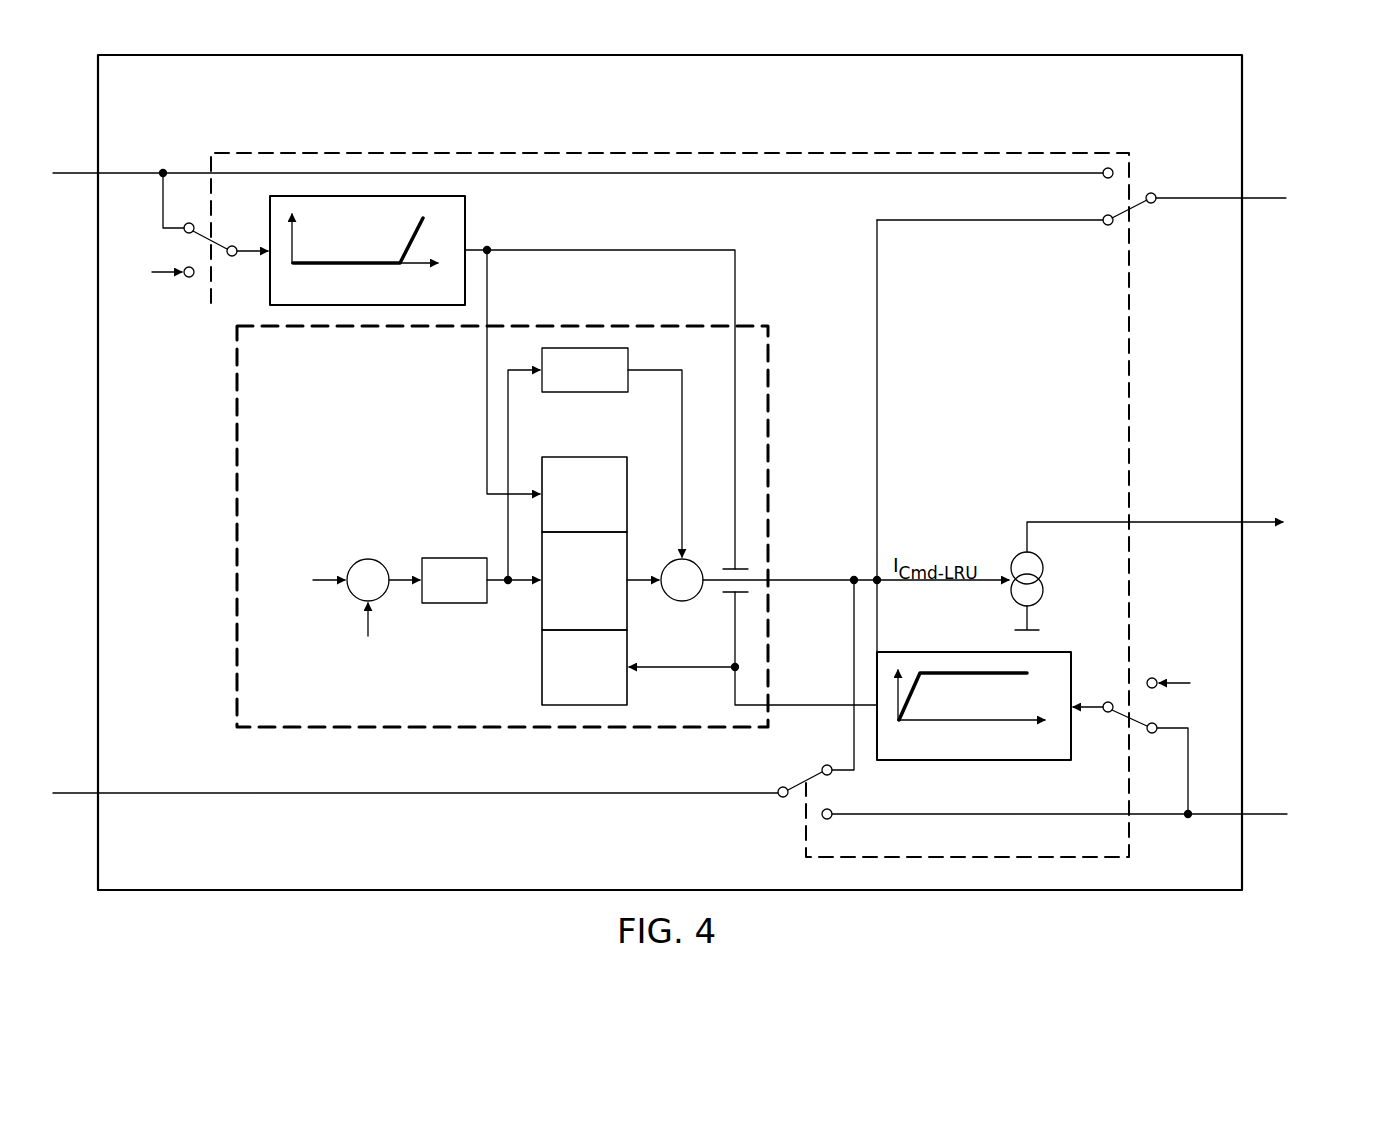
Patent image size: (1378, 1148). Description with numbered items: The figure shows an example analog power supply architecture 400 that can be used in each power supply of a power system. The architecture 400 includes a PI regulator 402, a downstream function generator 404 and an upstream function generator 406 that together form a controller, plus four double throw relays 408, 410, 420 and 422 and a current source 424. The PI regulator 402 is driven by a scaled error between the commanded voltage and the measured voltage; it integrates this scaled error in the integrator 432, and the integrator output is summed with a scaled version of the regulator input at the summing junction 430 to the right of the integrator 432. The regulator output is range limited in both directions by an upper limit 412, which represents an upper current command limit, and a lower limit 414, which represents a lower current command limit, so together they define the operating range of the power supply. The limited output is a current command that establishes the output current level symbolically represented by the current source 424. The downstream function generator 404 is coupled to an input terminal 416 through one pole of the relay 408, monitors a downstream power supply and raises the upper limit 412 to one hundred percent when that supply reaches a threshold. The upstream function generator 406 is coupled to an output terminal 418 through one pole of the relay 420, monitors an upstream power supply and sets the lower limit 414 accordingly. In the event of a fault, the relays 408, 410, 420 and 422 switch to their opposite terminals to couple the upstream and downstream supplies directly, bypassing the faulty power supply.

The analog power supply architecture 400 is at (1300, 130).
The PI regulator 402 is at (388, 392).
The downstream function generator 404 is at (470, 222).
The upstream function generator 406 is at (973, 650).
The relay 408 is at (218, 257).
The relay 410 is at (817, 779).
The upper limit 412 is at (585, 460).
The lower limit 414 is at (550, 681).
The input terminal 416 is at (75, 172).
The output terminal 418 is at (1265, 817).
The relay 420 is at (1118, 709).
The relay 422 is at (1145, 203).
The current source 424 is at (1043, 590).
The summing junction 430 is at (690, 603).
The integrator 432 is at (550, 613).